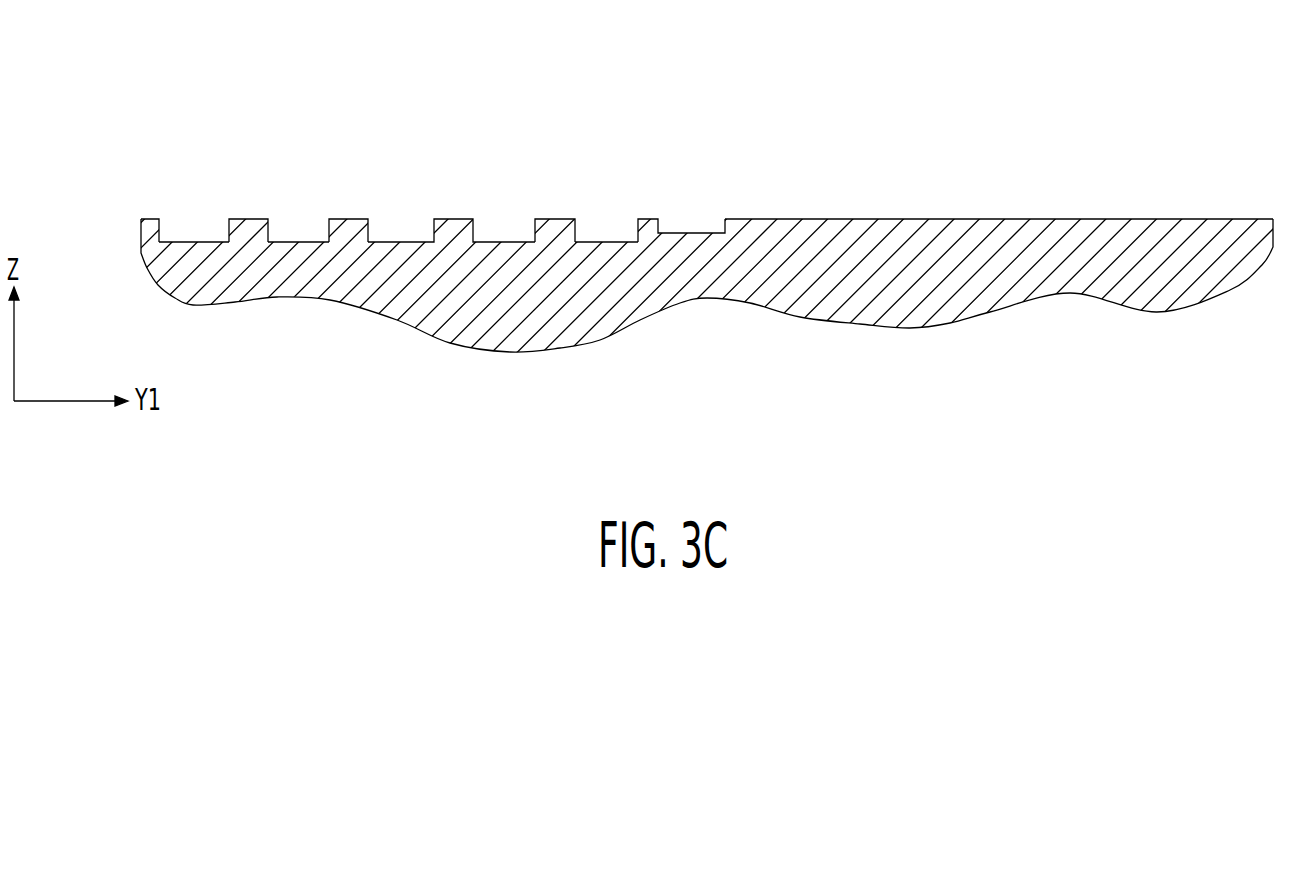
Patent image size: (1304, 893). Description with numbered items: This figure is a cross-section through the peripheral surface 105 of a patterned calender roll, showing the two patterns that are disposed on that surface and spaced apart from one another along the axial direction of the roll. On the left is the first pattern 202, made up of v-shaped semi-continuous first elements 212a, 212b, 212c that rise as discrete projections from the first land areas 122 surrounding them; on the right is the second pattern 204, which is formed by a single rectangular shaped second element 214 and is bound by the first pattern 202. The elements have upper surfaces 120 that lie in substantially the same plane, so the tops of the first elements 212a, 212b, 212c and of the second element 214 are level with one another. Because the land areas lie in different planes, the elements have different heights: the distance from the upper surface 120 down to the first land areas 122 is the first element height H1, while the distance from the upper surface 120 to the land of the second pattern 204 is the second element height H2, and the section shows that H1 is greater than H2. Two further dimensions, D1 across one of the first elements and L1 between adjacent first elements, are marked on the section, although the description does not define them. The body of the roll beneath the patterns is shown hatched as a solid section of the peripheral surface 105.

The peripheral surface 105 is at (1241, 210).
The upper surface 120 is at (561, 219).
The first land area 122 is at (593, 242).
The first pattern 202 is at (660, 105).
The second pattern 204 is at (1272, 105).
The first element 212a is at (150, 218).
The first element 212b is at (248, 218).
The first element 212c is at (347, 218).
The second element 214 is at (980, 219).
The first element height H1 is at (227, 219).
The second element height H2 is at (722, 219).
The protrusion width D1 is at (452, 204).
The protrusion spacing L1 is at (480, 227).